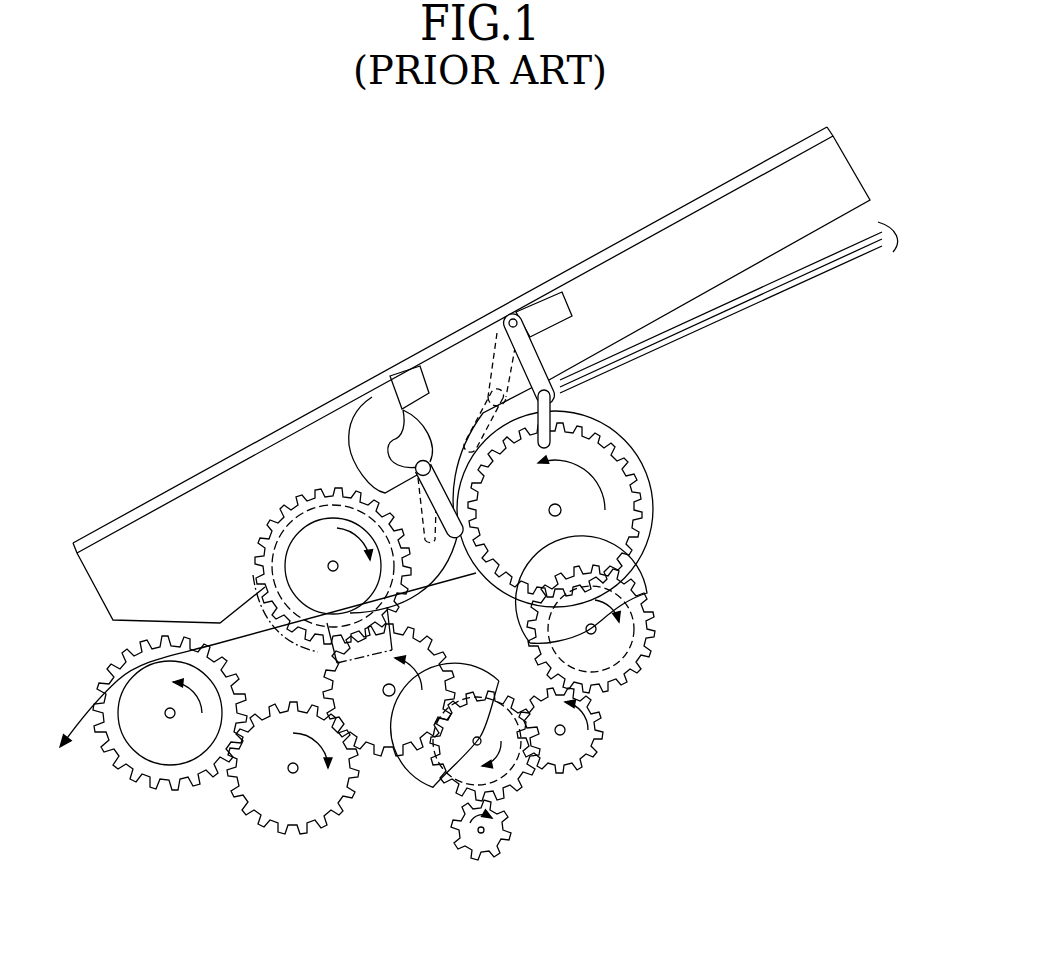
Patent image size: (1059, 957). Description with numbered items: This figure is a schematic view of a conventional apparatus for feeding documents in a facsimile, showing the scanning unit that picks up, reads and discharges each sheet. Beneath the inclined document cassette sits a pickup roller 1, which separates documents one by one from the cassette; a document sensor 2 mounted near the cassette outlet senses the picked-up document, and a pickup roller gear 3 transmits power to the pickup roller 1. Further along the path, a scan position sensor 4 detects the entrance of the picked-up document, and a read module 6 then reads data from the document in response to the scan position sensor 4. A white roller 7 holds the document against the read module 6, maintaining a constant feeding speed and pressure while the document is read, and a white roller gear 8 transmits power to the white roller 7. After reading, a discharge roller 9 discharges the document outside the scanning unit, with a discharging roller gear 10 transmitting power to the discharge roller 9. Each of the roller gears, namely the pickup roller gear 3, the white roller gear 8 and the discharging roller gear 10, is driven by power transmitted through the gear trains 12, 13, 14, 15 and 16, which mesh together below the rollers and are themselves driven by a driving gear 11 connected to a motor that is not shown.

The pickup roller 1 is at (622, 445).
The document sensor 2 is at (505, 340).
The pickup roller gear 3 is at (608, 480).
The scan position sensor 4 is at (400, 390).
The read module 6 is at (262, 585).
The white roller 7 is at (294, 480).
The white roller gear 8 is at (310, 523).
The discharge roller 9 is at (133, 732).
The discharging roller gear 10 is at (130, 663).
The driving gear 11 is at (493, 848).
The gear train 12 is at (513, 780).
The gear train 13 is at (600, 718).
The gear train 14 is at (642, 622).
The gear train 15 is at (385, 733).
The gear train 16 is at (253, 787).